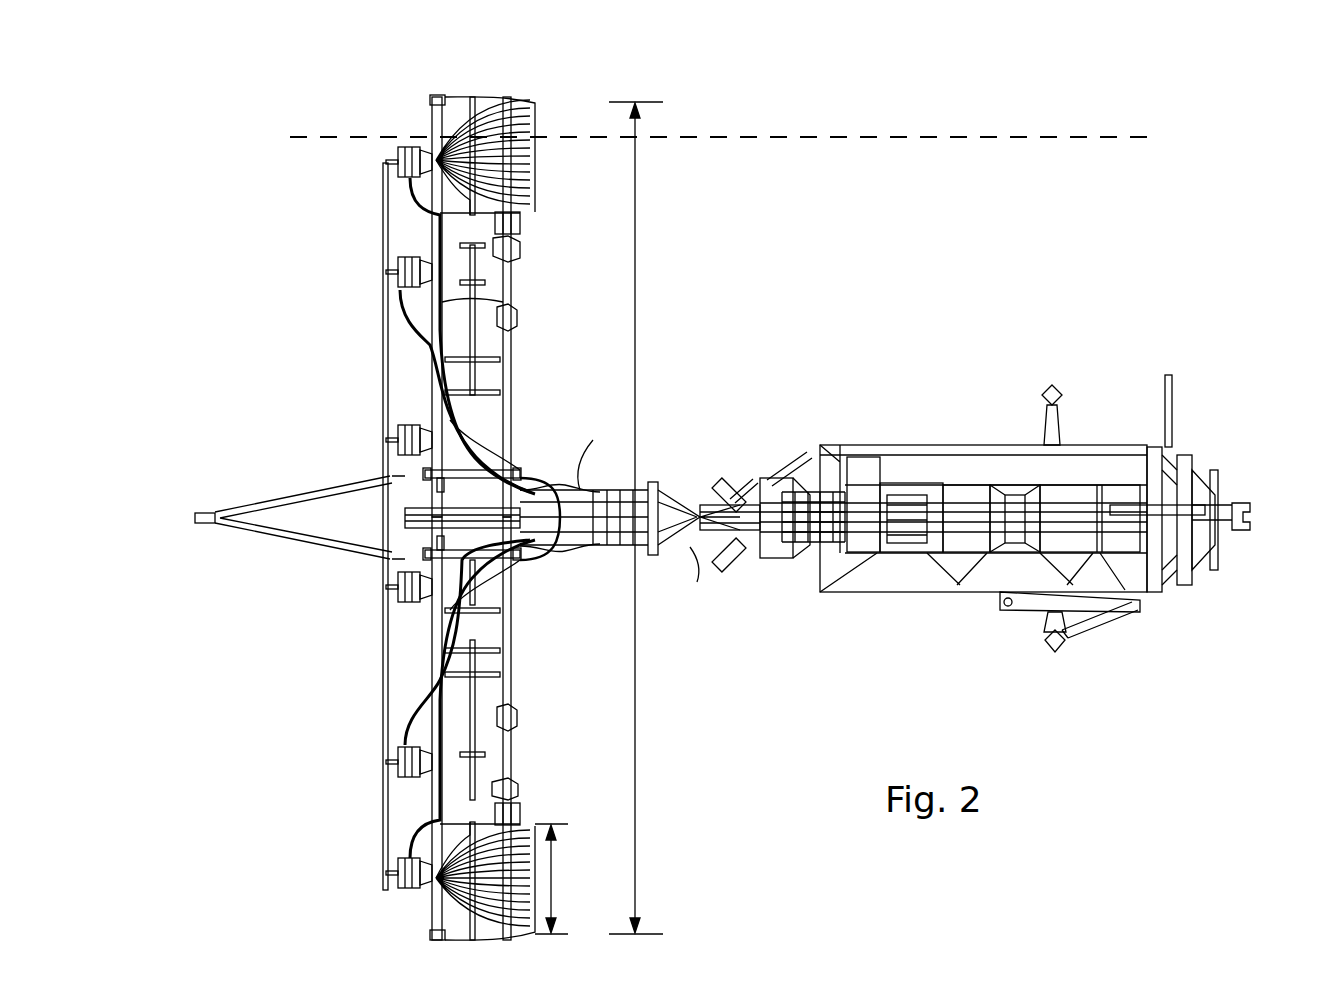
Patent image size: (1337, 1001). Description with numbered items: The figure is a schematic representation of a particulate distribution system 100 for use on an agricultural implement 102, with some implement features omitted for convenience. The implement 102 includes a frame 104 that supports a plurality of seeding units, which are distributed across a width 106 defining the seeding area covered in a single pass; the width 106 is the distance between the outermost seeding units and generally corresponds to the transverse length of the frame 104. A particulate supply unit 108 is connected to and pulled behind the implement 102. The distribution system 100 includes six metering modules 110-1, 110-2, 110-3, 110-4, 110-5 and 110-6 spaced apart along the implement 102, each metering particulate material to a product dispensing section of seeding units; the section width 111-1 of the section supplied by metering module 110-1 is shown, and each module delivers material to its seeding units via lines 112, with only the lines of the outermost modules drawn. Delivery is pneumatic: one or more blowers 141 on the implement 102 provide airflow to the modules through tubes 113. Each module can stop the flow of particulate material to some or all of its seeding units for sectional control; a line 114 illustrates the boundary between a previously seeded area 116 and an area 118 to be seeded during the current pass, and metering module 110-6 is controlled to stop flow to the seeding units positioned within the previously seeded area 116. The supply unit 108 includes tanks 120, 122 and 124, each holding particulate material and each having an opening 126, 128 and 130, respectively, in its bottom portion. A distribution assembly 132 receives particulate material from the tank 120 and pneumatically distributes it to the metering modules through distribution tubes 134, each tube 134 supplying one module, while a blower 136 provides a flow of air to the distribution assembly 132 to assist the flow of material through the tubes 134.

The particulate distribution system 100 is at (705, 368).
The agricultural implement 102 is at (430, 270).
The frame 104 is at (432, 728).
The width 106 is at (637, 220).
The particulate supply unit 108 is at (1034, 496).
The metering module 110-1 is at (398, 880).
The metering module 110-2 is at (398, 775).
The metering module 110-3 is at (398, 598).
The metering module 110-4 is at (398, 440).
The metering module 110-5 is at (398, 280).
The metering module 110-6 is at (398, 162).
The section width 111-1 is at (553, 866).
The lines 112 is at (520, 100).
The tubes 113 is at (383, 380).
The line 114 is at (772, 137).
The previously seeded area 116 is at (960, 92).
The area to be seeded 118 is at (960, 216).
The tank 120 is at (882, 582).
The tank 122 is at (983, 582).
The tank 124 is at (1128, 572).
The opening 126 is at (897, 485).
The opening 128 is at (1015, 500).
The opening 130 is at (1125, 485).
The distribution assembly 132 is at (933, 472).
The distribution tubes 134 is at (405, 322).
The blower 136 is at (1240, 500).
The blower 141 is at (395, 518).